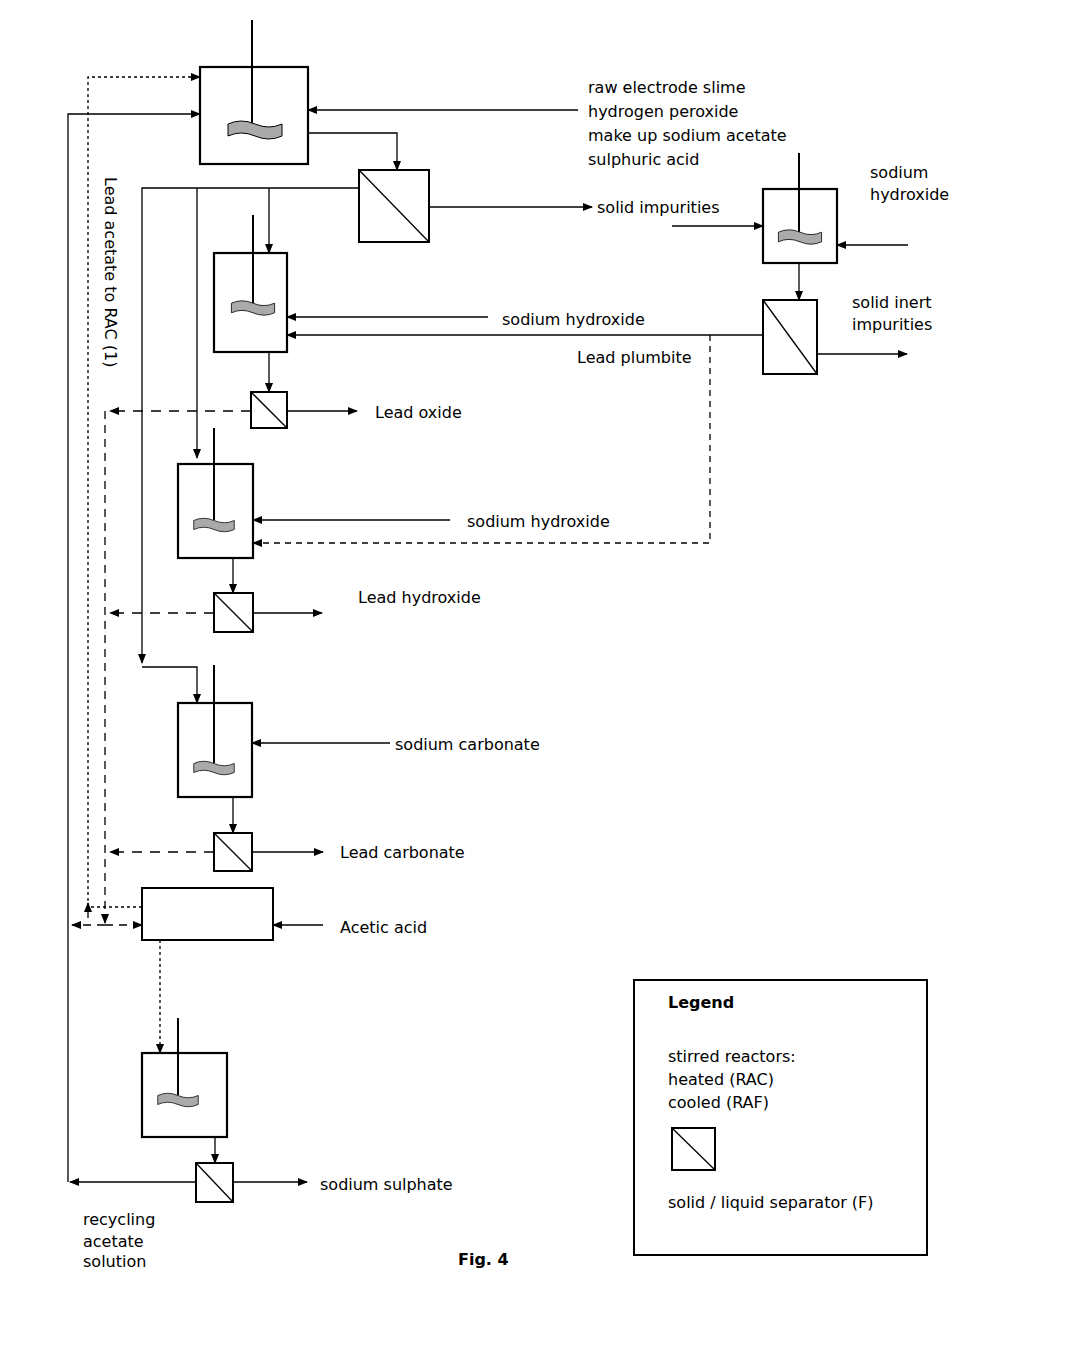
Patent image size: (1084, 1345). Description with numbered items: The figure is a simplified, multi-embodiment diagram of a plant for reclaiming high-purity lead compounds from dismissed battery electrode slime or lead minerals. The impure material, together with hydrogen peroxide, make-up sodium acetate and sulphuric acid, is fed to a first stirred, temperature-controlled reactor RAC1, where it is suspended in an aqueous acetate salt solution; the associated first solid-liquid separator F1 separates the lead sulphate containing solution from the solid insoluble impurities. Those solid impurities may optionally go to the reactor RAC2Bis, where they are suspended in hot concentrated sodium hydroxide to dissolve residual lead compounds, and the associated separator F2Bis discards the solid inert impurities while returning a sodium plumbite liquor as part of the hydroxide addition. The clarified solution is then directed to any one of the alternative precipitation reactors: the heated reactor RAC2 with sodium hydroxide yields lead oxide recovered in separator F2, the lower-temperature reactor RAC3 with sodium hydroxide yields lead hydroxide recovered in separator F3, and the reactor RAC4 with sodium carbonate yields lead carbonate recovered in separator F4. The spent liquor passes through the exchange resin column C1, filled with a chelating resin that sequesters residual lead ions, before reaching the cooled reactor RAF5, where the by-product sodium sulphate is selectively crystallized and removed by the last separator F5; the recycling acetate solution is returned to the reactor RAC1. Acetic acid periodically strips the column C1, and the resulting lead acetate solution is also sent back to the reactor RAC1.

The first reactor RAC1 is at (293, 92).
The first solid-liquid separator F1 is at (422, 194).
The second reactor RAC2 is at (316, 283).
The second solid-liquid separator F2 is at (304, 397).
The optional reactor RAC2Bis is at (743, 212).
The associated liquid-solid separator F2Bis is at (793, 361).
The second reactor RAC3 is at (281, 493).
The second solid-liquid separator F3 is at (268, 599).
The second reactor RAC4 is at (261, 731).
The second solid-liquid separator F4 is at (268, 839).
The exchange resin column C1 is at (220, 942).
The third and last reactor RAF5 is at (224, 1077).
The third and last solid-liquid separator F5 is at (250, 1168).